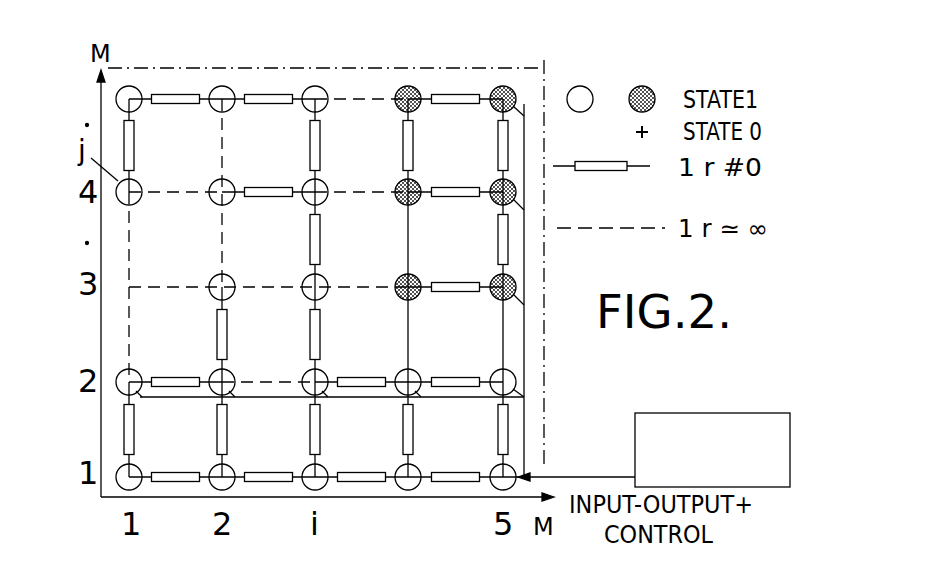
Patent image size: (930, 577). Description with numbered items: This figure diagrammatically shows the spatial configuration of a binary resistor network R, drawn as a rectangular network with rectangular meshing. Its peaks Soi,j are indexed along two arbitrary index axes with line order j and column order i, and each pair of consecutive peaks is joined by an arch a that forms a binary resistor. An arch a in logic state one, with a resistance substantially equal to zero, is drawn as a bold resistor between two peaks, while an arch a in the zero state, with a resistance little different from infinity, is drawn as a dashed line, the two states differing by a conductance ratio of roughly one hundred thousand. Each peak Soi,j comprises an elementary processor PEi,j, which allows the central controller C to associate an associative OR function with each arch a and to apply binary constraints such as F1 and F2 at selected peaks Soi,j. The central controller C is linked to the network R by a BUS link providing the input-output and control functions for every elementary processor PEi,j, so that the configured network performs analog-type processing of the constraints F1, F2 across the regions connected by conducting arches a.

The arch a is at (343, 105).
The network R is at (122, 336).
The elementary processor PEi,j is at (303, 109).
The peak Soi,j is at (328, 184).
The binary constraint F1 is at (302, 299).
The binary constraint F2 is at (492, 301).
The BUS link BUS is at (385, 292).
The central controller C is at (748, 413).